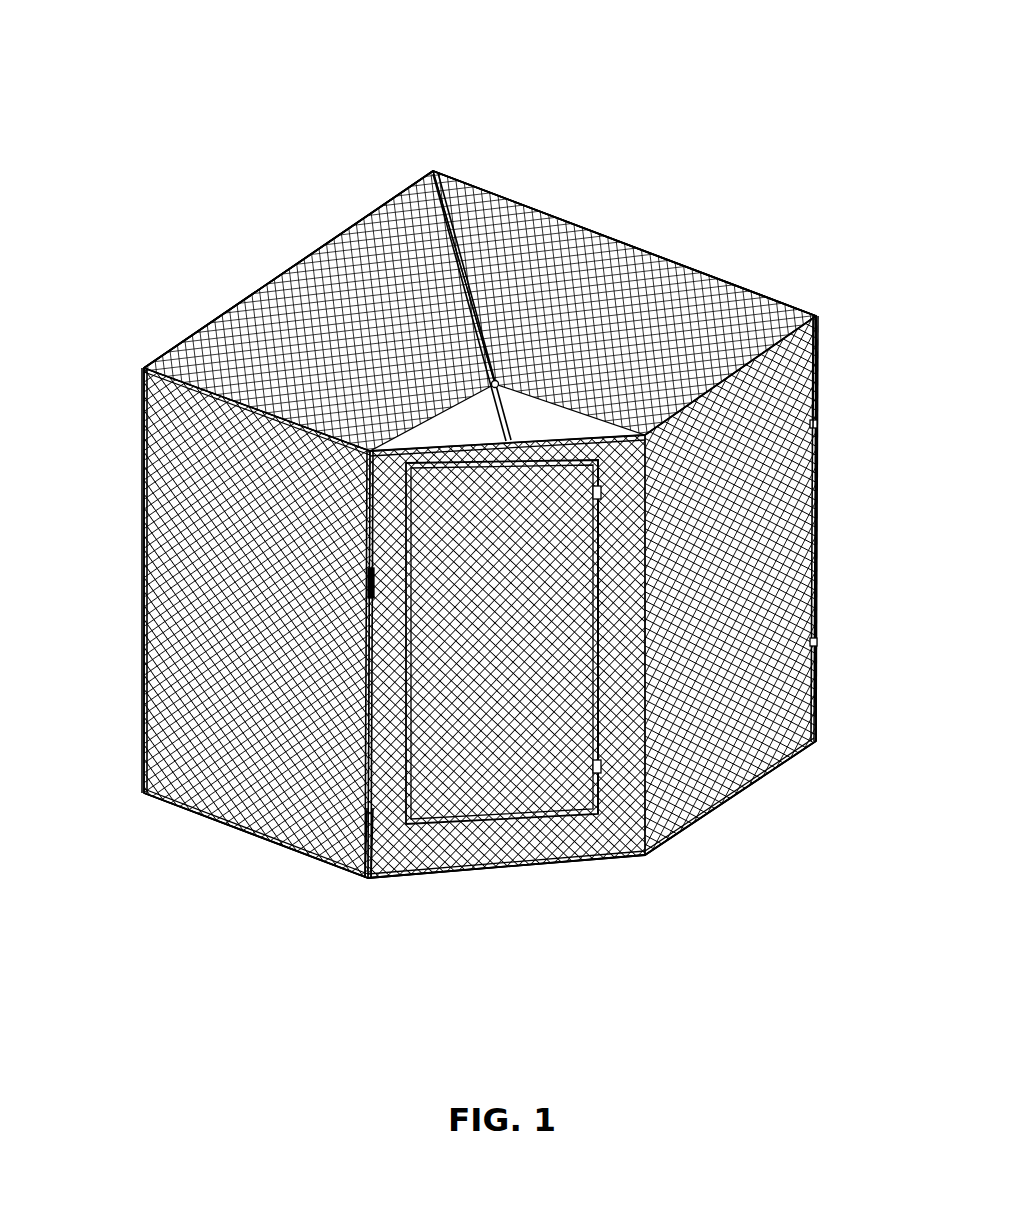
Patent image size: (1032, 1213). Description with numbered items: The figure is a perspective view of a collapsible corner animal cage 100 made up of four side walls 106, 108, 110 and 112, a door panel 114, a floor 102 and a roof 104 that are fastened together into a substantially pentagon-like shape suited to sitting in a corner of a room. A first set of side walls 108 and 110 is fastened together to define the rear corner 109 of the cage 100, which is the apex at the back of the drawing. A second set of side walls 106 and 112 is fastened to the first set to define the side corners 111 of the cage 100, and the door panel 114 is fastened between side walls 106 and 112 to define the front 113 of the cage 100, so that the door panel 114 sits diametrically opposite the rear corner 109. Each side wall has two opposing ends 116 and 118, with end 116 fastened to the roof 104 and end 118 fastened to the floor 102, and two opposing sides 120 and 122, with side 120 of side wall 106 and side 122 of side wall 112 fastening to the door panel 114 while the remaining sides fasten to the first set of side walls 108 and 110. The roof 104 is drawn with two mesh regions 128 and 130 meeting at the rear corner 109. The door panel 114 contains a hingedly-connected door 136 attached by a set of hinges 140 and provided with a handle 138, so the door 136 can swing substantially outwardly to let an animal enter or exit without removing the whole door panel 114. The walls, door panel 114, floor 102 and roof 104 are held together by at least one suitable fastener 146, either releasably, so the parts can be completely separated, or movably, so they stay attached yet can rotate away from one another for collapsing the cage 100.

The collapsible corner animal cage 100 is at (545, 127).
The floor 102 is at (250, 832).
The roof 104 is at (414, 190).
The side wall 106 is at (260, 640).
The side wall 108 is at (185, 325).
The rear corner 109 is at (428, 168).
The side wall 110 is at (695, 267).
The side corners 111 is at (134, 358).
The side wall 112 is at (736, 577).
The front 113 is at (506, 876).
The door panel 114 is at (518, 849).
The end 116 is at (761, 412).
The end 118 is at (748, 772).
The side 120 is at (362, 588).
The side 122 is at (810, 535).
The left roof panel 128 is at (331, 368).
The right roof panel 130 is at (604, 351).
The door 136 is at (530, 581).
The handle 138 is at (352, 856).
The hinges 140 is at (592, 772).
The fastener 146 is at (810, 410).